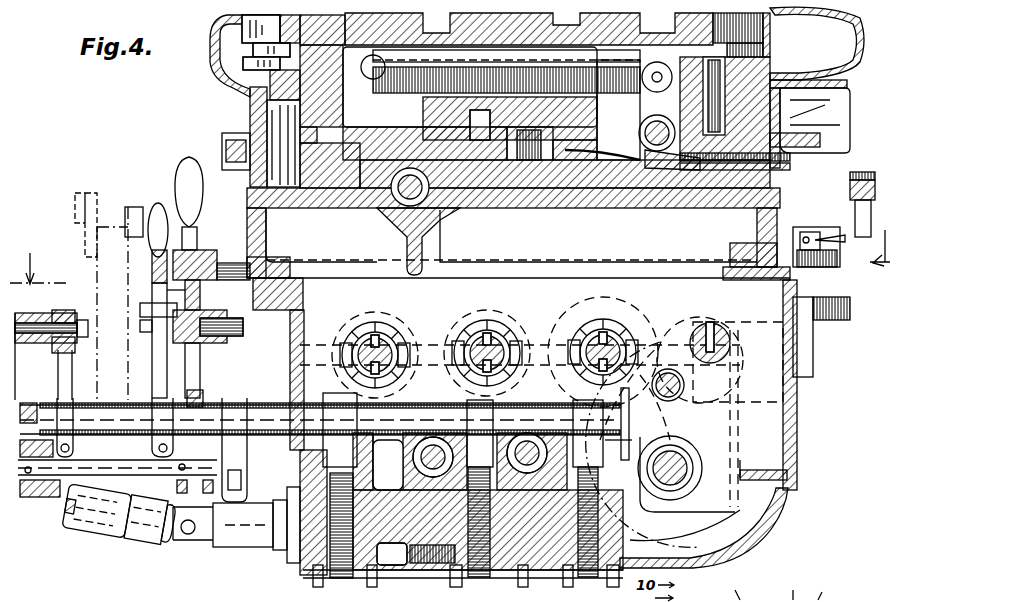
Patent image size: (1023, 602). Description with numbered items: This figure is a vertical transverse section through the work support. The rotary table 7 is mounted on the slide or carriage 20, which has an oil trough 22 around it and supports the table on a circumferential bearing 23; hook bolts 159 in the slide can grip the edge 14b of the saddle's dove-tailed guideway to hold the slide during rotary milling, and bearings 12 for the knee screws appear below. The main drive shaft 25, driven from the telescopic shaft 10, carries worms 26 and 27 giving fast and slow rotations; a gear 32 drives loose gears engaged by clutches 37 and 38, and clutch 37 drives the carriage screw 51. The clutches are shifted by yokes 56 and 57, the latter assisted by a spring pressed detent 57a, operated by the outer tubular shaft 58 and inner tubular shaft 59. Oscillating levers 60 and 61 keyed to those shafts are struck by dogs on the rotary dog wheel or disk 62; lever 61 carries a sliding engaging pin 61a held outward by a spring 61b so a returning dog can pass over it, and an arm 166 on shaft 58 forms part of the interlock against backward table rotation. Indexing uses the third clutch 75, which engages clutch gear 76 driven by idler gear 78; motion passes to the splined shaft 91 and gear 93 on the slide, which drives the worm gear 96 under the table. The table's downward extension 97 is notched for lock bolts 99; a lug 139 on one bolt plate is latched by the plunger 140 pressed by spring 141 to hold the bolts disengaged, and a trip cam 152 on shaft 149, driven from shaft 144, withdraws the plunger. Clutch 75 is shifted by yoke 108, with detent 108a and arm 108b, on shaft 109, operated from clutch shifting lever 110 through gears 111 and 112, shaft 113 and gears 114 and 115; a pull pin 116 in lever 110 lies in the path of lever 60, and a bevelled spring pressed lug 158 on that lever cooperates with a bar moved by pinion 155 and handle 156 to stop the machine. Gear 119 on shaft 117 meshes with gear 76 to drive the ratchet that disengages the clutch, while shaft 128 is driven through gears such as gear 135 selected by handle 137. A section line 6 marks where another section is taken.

The work support or table 7 is at (770, 20).
The telescopic shaft 10 is at (105, 535).
The bearings 12 is at (654, 595).
The edge of the saddle dove-tailed guideway 14b is at (385, 208).
The slide or carriage 20 is at (250, 112).
The oil trough 22 is at (243, 30).
The circumferential bearing 23 is at (250, 98).
The main drive shaft 25 is at (225, 548).
The worm 26 is at (420, 540).
The worm 27 is at (527, 514).
The gear 32 is at (463, 510).
The clutch 37 is at (370, 322).
The clutch 38 is at (483, 320).
The slide or carriage screw 51 is at (405, 208).
The clutch yoke 56 is at (320, 375).
The clutch yoke 57 is at (445, 350).
The spring pressed detent 57a is at (478, 577).
The outer tubular shaft 58 is at (275, 405).
The inner tubular shaft 59 is at (135, 400).
The oscillating lever 60 is at (152, 348).
The oscillating lever 61 is at (58, 362).
The engaging pin 61a is at (80, 306).
The spring 61b is at (40, 313).
The rotary dog wheel or disk 62 is at (105, 265).
The section line 6 is at (450, 257).
The third clutch 75 is at (608, 335).
The clutch gear 76 is at (650, 345).
The idler gear 78 is at (644, 414).
The splined shaft 91 is at (655, 175).
The gear 93 is at (645, 135).
The worm gear 96 is at (371, 67).
The circumferential downwardly-extending extension 97 is at (348, 113).
The lock bolts 99 is at (495, 143).
The yoke 108 is at (560, 345).
The spring pressed detent 108a is at (590, 577).
The arm of the clutch shifter yoke 108b is at (704, 528).
The shaft 109 is at (632, 415).
The clutch shifting lever 110 is at (200, 374).
The gear 111 is at (180, 385).
The gear 112 is at (177, 487).
The shaft 113 is at (130, 462).
The gear 114 is at (30, 497).
The gear 115 is at (33, 357).
The pull pin 116 is at (235, 343).
The shaft 117 is at (675, 505).
The gear 119 is at (740, 462).
The shaft 128 is at (707, 325).
The gear 135 is at (748, 340).
The handle 137 is at (813, 337).
The lug 139 is at (522, 150).
The plunger 140 is at (603, 165).
The spring 141 is at (730, 172).
The shaft 144 is at (724, 587).
The shaft 149 is at (835, 591).
The trip cam 152 is at (788, 586).
The pinion 155 is at (815, 270).
The handle 156 is at (840, 204).
The spring pressed lug 158 is at (228, 253).
The hook bolts 159 is at (222, 145).
The arm 166 is at (247, 458).